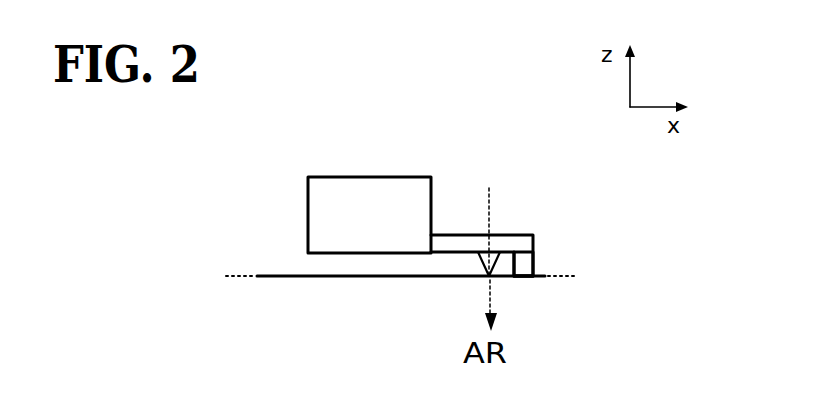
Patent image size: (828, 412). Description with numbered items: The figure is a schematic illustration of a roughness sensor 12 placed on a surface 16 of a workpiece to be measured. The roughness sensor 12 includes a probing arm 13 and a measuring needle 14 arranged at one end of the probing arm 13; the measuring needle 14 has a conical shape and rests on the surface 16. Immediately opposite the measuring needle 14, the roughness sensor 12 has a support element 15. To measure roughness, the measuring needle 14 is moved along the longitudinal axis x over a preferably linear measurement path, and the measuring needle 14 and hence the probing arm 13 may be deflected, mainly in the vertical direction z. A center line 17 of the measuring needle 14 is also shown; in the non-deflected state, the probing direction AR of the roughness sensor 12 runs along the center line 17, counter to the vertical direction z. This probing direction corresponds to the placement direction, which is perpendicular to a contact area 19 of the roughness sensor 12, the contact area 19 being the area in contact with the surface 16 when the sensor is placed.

The roughness sensor 12 is at (362, 177).
The probing arm 13 is at (458, 235).
The measuring needle 14 is at (482, 257).
The support element 15 is at (527, 257).
The surface 16 is at (285, 276).
The center line 17 is at (489, 212).
The contact area 19 is at (520, 278).